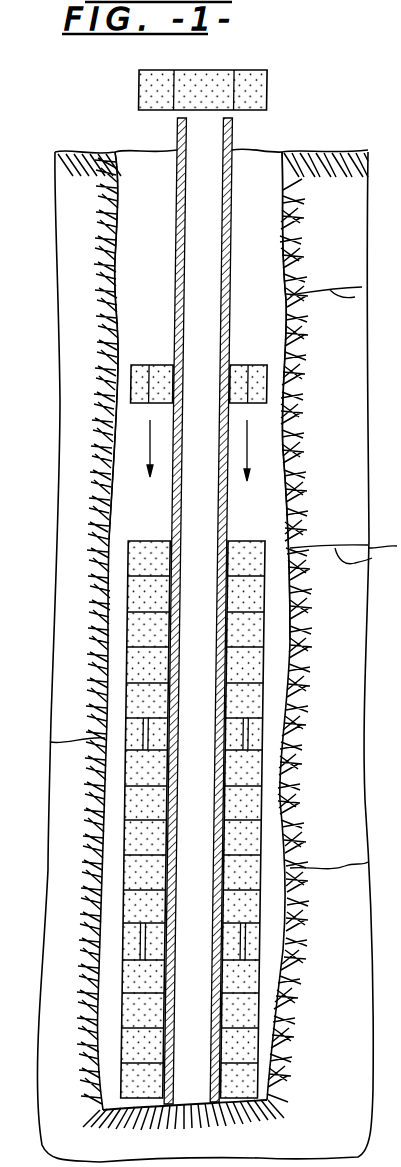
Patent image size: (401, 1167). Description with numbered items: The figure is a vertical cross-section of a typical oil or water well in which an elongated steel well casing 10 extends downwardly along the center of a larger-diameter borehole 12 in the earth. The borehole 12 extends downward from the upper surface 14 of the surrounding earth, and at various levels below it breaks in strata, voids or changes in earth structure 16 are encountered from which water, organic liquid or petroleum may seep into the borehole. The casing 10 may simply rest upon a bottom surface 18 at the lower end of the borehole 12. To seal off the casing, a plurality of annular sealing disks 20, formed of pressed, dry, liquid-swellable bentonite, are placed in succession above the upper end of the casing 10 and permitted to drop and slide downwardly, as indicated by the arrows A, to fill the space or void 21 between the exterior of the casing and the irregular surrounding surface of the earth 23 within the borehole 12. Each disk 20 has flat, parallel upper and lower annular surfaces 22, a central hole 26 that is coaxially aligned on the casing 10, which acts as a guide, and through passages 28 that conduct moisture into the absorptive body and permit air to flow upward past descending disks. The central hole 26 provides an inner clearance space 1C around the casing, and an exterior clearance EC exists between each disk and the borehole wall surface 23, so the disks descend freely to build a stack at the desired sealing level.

The well casing 10 is at (233, 178).
The borehole 12 is at (275, 235).
The upper surface 14 is at (90, 152).
The breaks in strata 16 is at (352, 293).
The bottom surface 18 is at (192, 1100).
The annular sealing disk 20 is at (267, 94).
The space or void 21 is at (252, 222).
The annular surfaces 22 is at (152, 70).
The surrounding surface of the earth 23 is at (112, 283).
The central hole 26 is at (200, 78).
The through passages 28 is at (133, 365).
The exterior clearance EC is at (115, 400).
The inner clearance space 1C is at (173, 365).
The arrows A is at (147, 452).